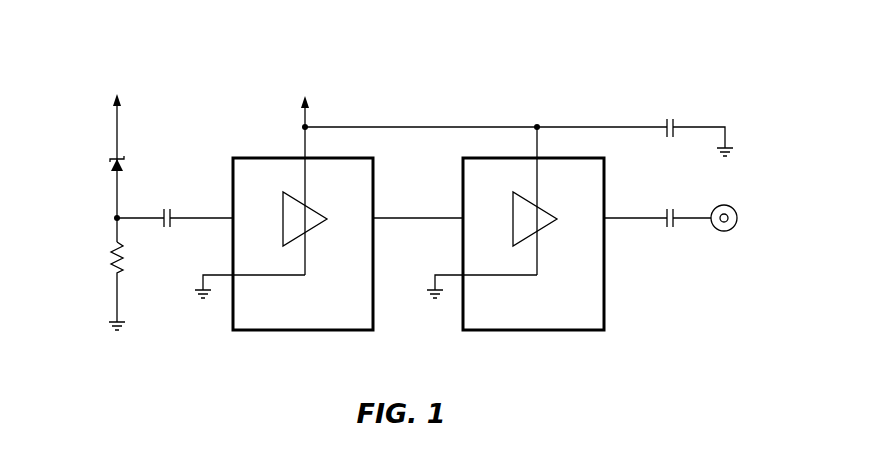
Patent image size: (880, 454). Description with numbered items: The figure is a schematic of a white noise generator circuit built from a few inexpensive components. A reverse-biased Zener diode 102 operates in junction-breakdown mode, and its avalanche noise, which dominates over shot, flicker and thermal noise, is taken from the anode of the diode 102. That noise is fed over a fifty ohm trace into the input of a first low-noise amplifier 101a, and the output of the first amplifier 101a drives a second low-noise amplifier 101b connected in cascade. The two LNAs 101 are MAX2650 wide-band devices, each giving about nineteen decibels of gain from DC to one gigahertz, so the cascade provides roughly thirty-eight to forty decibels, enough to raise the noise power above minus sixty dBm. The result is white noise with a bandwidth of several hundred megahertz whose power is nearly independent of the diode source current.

The low-noise amplifiers 101 is at (199, 53).
The Zener diode 102 is at (125, 156).
The first low-noise amplifier 101a is at (297, 331).
The second low-noise amplifier 101b is at (538, 331).